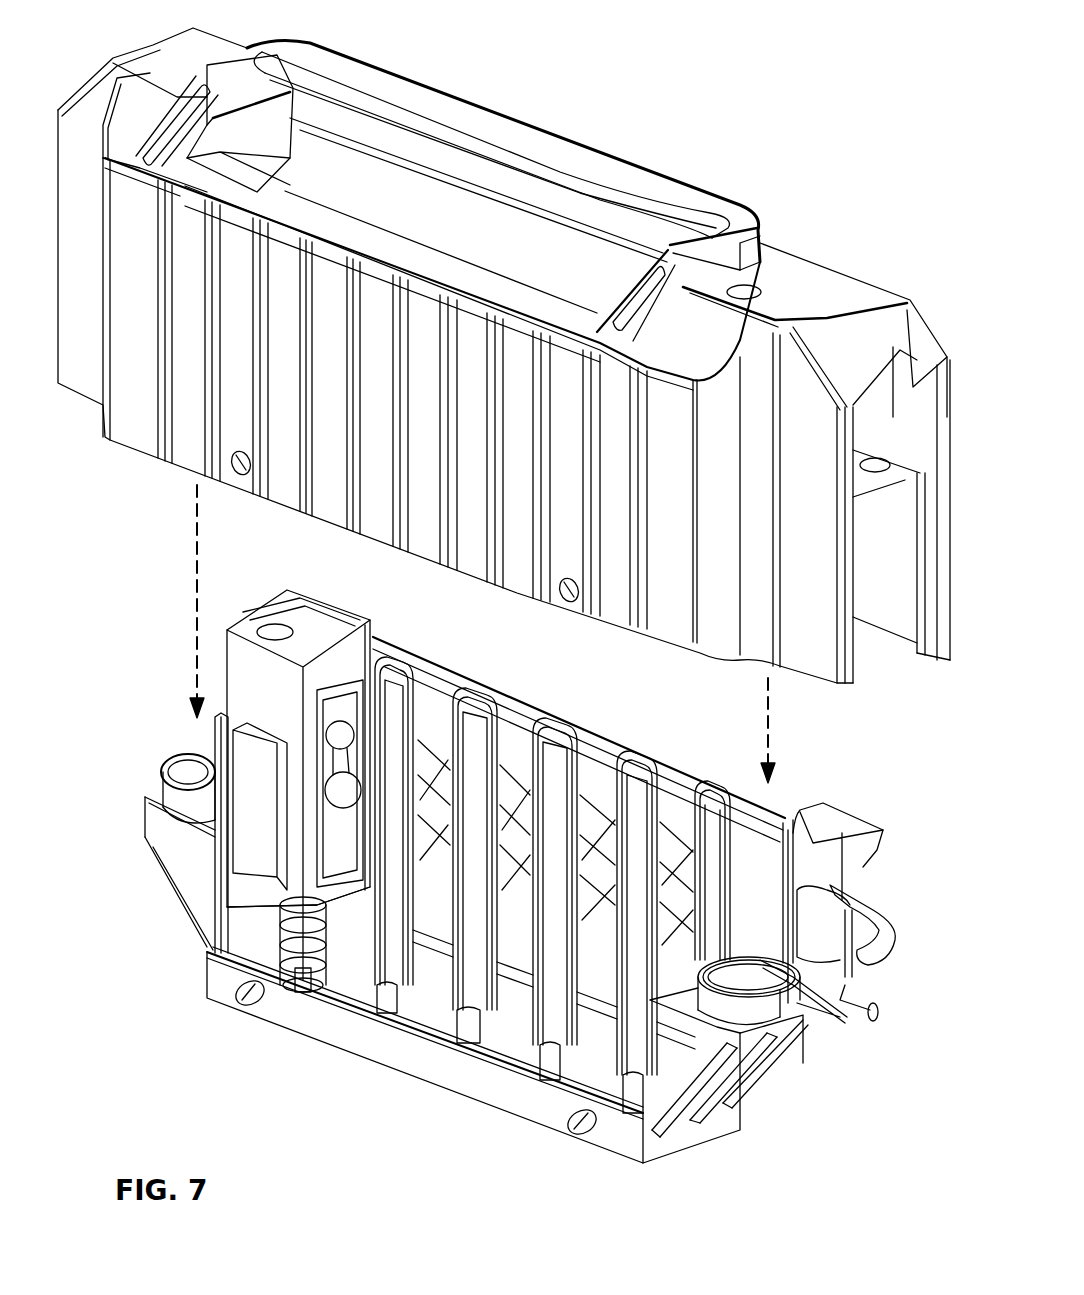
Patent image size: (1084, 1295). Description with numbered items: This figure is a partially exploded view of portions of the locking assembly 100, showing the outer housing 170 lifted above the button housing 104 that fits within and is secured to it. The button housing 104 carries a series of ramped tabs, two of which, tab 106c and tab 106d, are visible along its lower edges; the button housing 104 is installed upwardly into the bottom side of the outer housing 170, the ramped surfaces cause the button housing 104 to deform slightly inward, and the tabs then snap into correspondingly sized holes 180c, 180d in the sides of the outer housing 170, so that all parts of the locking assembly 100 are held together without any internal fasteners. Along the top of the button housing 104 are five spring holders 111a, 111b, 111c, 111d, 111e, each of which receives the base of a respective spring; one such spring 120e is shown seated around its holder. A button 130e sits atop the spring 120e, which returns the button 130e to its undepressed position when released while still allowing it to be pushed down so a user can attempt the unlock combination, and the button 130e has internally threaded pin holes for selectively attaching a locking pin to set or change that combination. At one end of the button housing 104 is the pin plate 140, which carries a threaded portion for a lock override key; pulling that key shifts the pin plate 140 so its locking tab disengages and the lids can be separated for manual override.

The locking assembly 100 is at (850, 140).
The button housing 104 is at (217, 978).
The tab 106c is at (243, 1007).
The tab 106d is at (577, 1133).
The spring holder 111a is at (303, 977).
The spring holder 111b is at (386, 1003).
The spring holder 111c is at (467, 1033).
The spring holder 111d is at (550, 1067).
The spring holder 111e is at (633, 1093).
The spring 120e is at (280, 930).
The button 130e is at (363, 623).
The pin plate 140 is at (832, 872).
The outer housing 170 is at (504, 355).
The hole 180c is at (242, 475).
The hole 180d is at (570, 602).